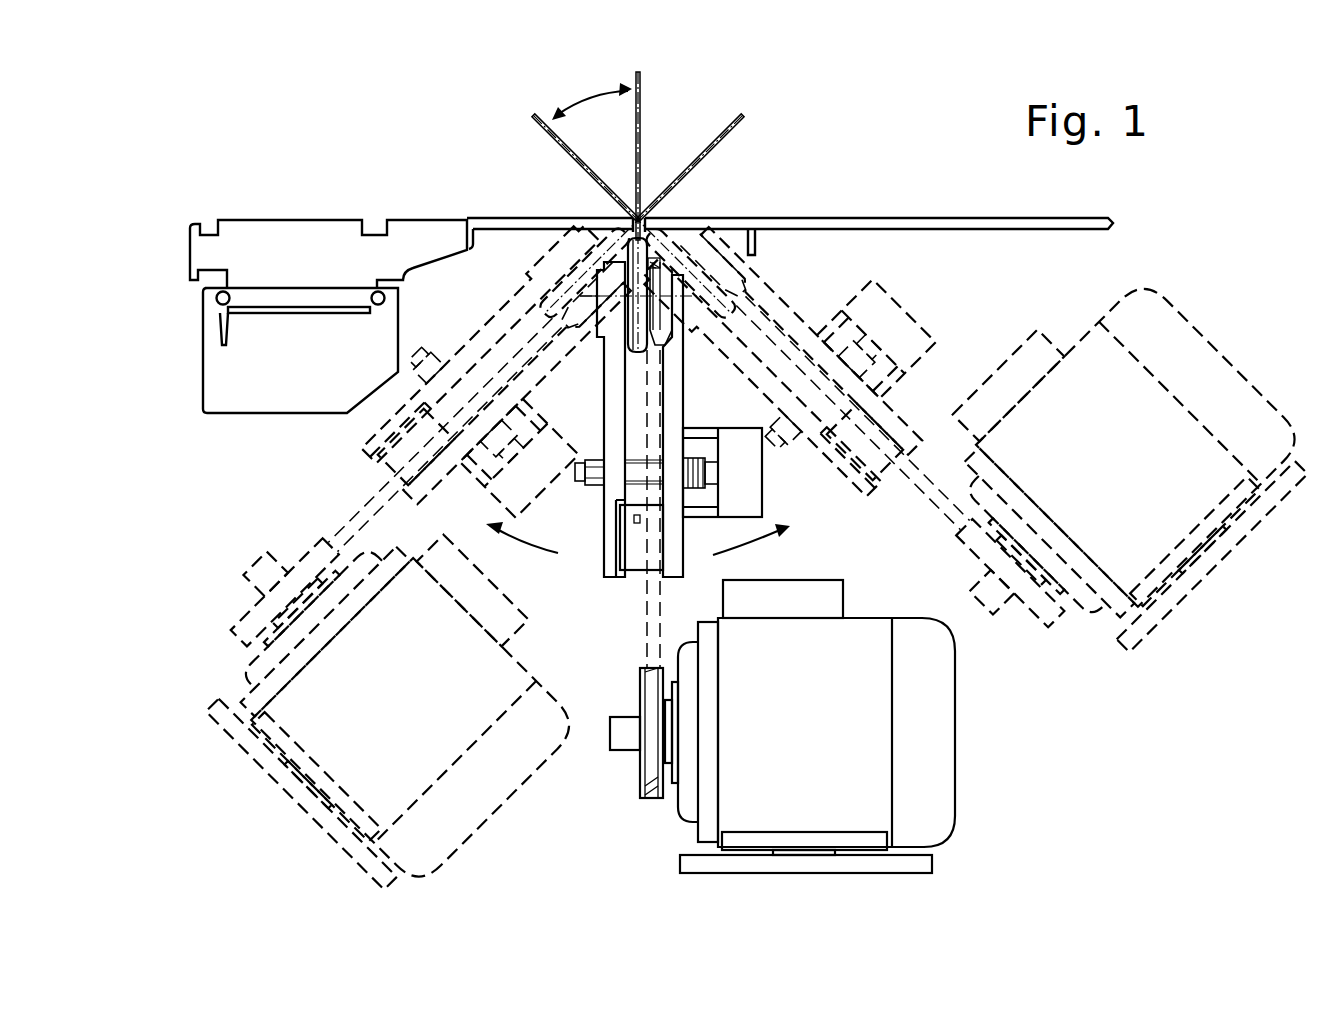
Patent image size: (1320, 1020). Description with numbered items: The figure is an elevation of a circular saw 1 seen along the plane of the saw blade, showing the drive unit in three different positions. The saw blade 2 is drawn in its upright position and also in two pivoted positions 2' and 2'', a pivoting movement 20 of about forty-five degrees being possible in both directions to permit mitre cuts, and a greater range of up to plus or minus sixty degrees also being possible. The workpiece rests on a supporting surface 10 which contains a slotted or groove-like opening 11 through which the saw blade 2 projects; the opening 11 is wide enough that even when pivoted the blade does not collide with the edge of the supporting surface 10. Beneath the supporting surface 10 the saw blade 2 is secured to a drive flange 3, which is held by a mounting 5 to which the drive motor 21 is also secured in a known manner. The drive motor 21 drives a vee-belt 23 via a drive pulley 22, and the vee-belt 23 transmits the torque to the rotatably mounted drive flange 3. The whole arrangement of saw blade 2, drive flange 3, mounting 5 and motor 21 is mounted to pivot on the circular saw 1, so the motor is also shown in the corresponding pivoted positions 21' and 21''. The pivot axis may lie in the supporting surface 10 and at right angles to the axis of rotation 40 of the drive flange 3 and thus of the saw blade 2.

The circular saw 1 is at (318, 195).
The saw blade 2 is at (669, 212).
The pivoted position of saw blade 2' is at (667, 214).
The pivoted position of saw blade 2'' is at (624, 214).
The drive flange 3 is at (672, 322).
The mounting 5 is at (700, 388).
The supporting surface 10 is at (503, 218).
The opening 11 is at (665, 208).
The pivoting movement 20 is at (600, 95).
The drive motor 21 is at (822, 726).
The drive motor in pivoted position 21' is at (381, 680).
The drive motor in pivoted position 21'' is at (1096, 475).
The drive pulley 22 is at (640, 770).
The vee-belt 23 is at (647, 607).
The axis of rotation 40 is at (590, 297).